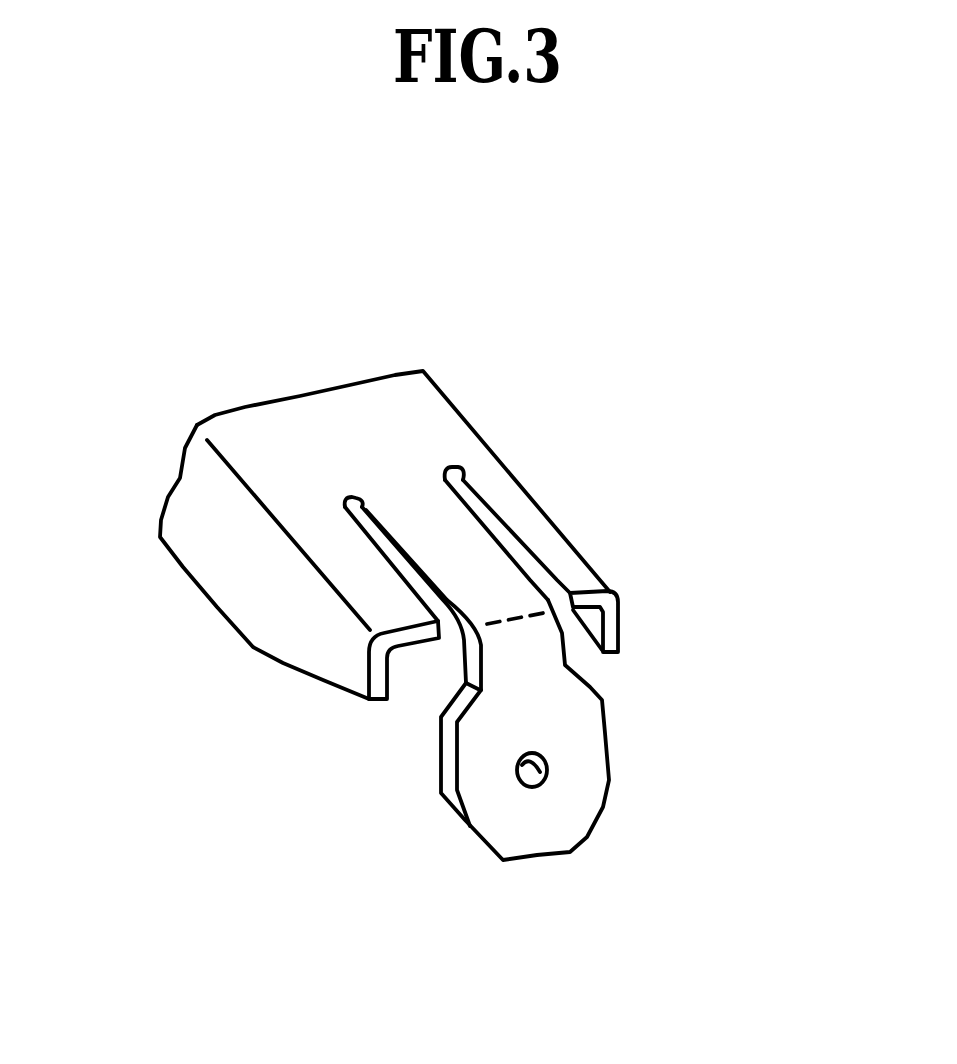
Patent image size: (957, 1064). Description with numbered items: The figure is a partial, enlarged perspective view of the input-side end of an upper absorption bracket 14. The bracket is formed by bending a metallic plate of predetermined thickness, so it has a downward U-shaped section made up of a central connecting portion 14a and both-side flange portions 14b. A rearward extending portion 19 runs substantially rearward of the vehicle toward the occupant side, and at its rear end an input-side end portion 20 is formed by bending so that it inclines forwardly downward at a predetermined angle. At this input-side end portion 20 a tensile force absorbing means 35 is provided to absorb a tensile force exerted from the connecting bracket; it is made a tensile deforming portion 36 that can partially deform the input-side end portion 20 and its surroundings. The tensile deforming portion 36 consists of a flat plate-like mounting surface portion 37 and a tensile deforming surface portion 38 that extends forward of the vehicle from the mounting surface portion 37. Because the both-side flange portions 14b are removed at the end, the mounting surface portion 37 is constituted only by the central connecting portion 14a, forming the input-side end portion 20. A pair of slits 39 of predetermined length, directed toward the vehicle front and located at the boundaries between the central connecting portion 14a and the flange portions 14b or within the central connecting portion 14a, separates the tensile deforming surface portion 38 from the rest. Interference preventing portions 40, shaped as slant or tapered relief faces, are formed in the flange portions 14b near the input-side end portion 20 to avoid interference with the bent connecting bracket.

The upper absorption bracket 14 is at (460, 552).
The central connecting portion 14a is at (247, 423).
The both-side flange portions 14b is at (187, 497).
The rearward extending portion 19 is at (652, 565).
The input-side end portion 20 is at (660, 730).
The tensile force absorbing means 35 is at (648, 531).
The tensile deforming portion 36 is at (688, 531).
The mounting surface portion 37 is at (660, 730).
The tensile deforming surface portion 38 is at (457, 543).
The slits 39 is at (360, 500).
The interference preventing portions 40 is at (313, 683).